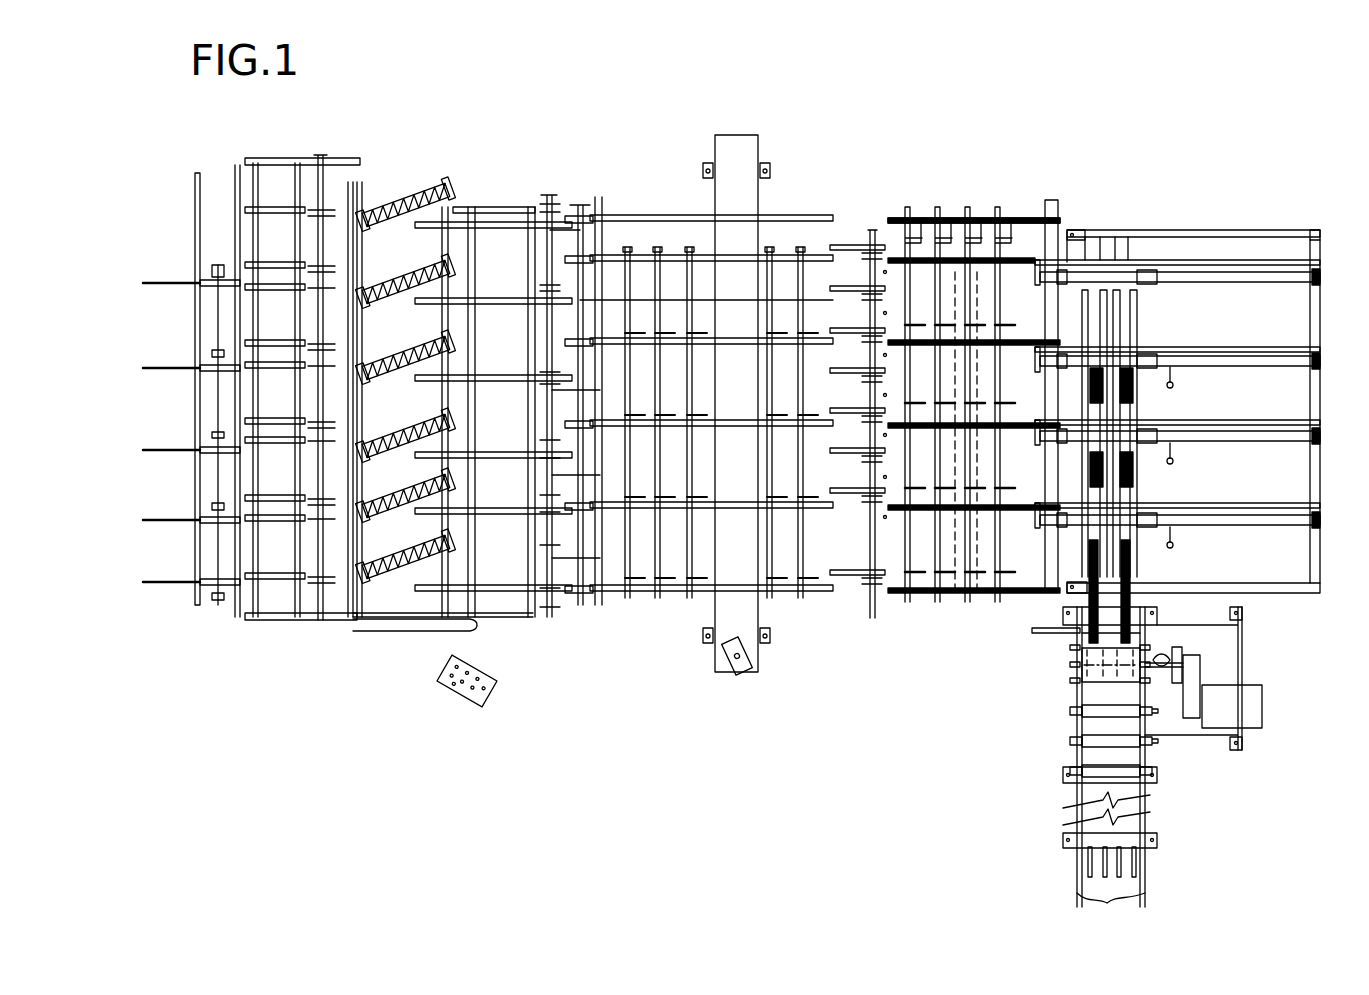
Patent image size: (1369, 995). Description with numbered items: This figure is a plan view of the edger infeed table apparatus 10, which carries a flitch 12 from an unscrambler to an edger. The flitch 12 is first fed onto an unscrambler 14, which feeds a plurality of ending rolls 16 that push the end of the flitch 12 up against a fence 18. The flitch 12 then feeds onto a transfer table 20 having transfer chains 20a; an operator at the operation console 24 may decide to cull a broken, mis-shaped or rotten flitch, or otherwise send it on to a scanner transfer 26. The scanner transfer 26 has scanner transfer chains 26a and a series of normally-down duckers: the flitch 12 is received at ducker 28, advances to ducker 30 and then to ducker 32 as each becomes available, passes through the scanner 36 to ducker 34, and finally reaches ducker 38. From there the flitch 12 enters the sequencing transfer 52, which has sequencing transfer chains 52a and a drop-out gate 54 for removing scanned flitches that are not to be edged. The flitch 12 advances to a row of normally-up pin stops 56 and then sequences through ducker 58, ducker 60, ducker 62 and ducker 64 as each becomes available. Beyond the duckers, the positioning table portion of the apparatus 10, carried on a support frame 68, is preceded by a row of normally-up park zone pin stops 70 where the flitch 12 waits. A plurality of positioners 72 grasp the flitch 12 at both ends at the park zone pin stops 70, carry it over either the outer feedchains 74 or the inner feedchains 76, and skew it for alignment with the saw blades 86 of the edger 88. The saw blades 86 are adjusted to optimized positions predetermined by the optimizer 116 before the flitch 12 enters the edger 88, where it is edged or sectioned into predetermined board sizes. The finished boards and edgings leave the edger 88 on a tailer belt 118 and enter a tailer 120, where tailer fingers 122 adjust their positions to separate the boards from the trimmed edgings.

The edger infeed table apparatus 10 is at (1110, 195).
The flitch 12 is at (960, 597).
The unscrambler 14 is at (293, 145).
The ending rolls 16 is at (410, 183).
The fence 18 is at (407, 617).
The transfer table 20 is at (497, 167).
The transfer chains 20a is at (485, 212).
The operation console 24 is at (455, 688).
The scanner transfer 26 is at (635, 150).
The scanner transfer chains 26a is at (623, 217).
The ducker 28 is at (647, 250).
The ducker 30 is at (675, 250).
The ducker 32 is at (707, 250).
The ducker 34 is at (787, 250).
The scanner 36 is at (735, 158).
The ducker 38 is at (818, 250).
The sequencing transfer 52 is at (963, 148).
The sequencing transfer chains 52a is at (898, 217).
The drop-out gate 54 is at (857, 245).
The pin stops 56 is at (883, 580).
The ducker 58 is at (920, 238).
The ducker 60 is at (952, 238).
The ducker 62 is at (982, 237).
The ducker 64 is at (1013, 238).
The support frame 68 is at (1243, 230).
The park zone pin stops 70 is at (1065, 565).
The positioners 72 is at (1210, 524).
The outer feedchains 74 is at (1083, 570).
The inner feedchains 76 is at (1128, 562).
The saw blades 86 is at (1067, 655).
The edger 88 is at (1103, 697).
The optimizer 116 is at (750, 653).
The tailer belt 118 is at (1130, 818).
The tailer 120 is at (1077, 853).
The tailer fingers 122 is at (1087, 865).